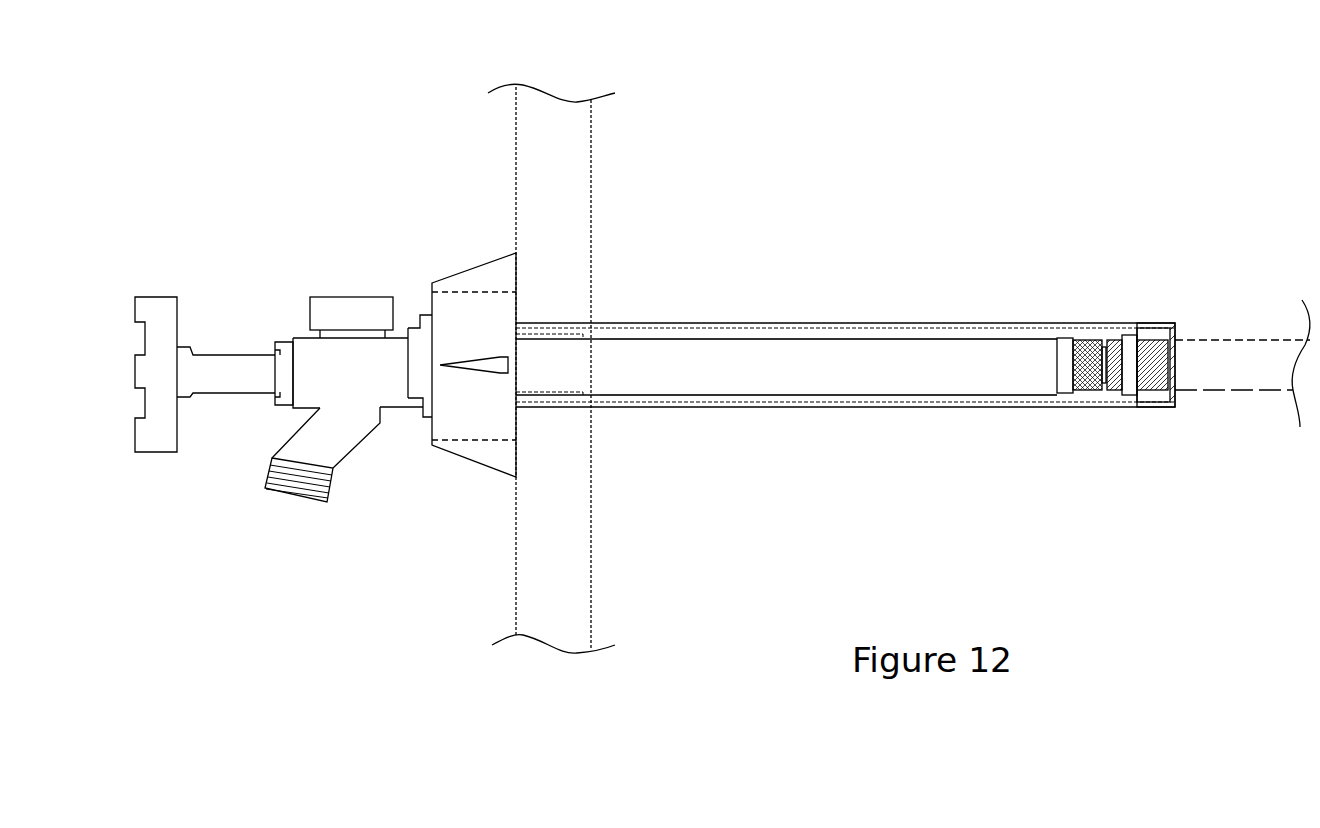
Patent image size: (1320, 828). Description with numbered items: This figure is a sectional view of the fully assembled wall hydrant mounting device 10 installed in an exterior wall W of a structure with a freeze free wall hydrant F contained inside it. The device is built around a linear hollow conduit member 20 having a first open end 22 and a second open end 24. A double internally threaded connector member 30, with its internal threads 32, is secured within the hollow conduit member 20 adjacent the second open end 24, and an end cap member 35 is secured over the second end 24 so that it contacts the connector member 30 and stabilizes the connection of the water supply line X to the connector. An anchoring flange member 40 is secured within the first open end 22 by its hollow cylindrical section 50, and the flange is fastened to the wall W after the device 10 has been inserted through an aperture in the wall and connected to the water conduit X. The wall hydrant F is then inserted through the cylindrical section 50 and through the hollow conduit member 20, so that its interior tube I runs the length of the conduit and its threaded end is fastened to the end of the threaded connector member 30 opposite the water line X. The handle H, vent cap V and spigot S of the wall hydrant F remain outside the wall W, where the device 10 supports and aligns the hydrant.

The wall hydrant mounting device 10 is at (947, 190).
The hollow conduit member 20 is at (718, 320).
The first end of hollow conduit member 22 is at (540, 320).
The second end of hollow conduit member 24 is at (1100, 320).
The double threaded connector member 30 is at (1102, 397).
The internal threads of connector member 32 is at (1140, 380).
The end cap member 35 is at (1168, 320).
The anchoring flange member 40 is at (473, 267).
The cylindrical section of anchoring flange member 50 is at (553, 400).
The handle of wall hydrant H is at (157, 452).
The freeze free wall hydrant F is at (255, 260).
The vent cap of wall hydrant V is at (352, 297).
The spigot of wall hydrant S is at (293, 495).
The exterior wall of structure W is at (593, 150).
The interior tube of wall hydrant I is at (817, 382).
The water supply line to wall hydrant X is at (1205, 337).